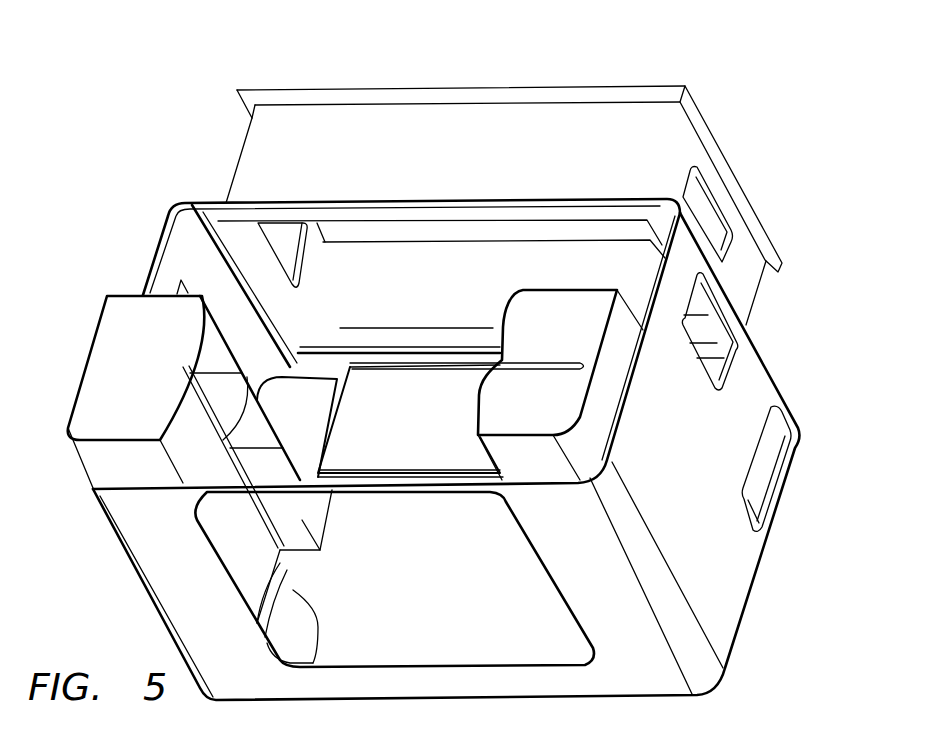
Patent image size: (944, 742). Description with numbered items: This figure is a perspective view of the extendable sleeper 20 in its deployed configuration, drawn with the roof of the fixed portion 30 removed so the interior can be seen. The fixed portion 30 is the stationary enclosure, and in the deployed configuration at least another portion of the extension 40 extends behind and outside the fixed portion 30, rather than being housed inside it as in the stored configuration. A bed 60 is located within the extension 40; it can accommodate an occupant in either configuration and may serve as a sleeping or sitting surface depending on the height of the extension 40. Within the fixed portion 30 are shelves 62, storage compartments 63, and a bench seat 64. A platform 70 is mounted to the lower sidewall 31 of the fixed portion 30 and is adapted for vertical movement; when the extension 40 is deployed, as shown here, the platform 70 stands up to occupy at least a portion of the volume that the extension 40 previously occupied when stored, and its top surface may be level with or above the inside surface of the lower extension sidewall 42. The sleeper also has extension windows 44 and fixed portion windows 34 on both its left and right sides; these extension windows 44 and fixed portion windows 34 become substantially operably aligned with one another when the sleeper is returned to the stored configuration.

The extendable sleeper 20 is at (177, 187).
The fixed portion 30 is at (706, 469).
The lower sidewall 31 is at (454, 599).
The fixed portion window 34 is at (173, 287).
The extension 40 is at (722, 102).
The lower extension sidewall 42 is at (464, 162).
The extension window 44 is at (305, 267).
The bed 60 is at (481, 298).
The shelves 62 is at (144, 419).
The storage compartments 63 is at (547, 412).
The bench seat 64 is at (311, 419).
The platform 70 is at (431, 435).